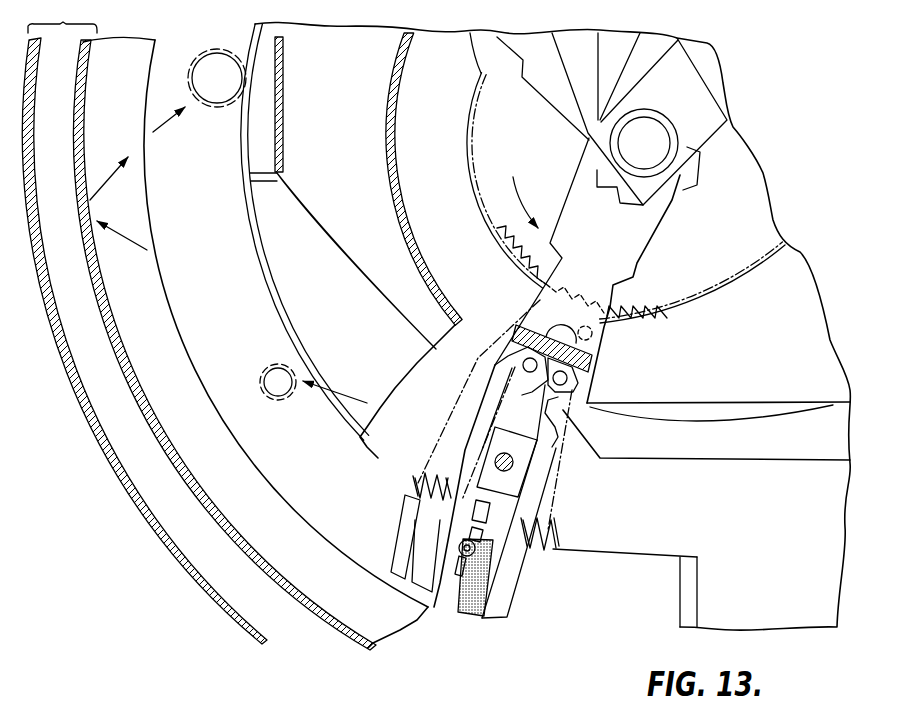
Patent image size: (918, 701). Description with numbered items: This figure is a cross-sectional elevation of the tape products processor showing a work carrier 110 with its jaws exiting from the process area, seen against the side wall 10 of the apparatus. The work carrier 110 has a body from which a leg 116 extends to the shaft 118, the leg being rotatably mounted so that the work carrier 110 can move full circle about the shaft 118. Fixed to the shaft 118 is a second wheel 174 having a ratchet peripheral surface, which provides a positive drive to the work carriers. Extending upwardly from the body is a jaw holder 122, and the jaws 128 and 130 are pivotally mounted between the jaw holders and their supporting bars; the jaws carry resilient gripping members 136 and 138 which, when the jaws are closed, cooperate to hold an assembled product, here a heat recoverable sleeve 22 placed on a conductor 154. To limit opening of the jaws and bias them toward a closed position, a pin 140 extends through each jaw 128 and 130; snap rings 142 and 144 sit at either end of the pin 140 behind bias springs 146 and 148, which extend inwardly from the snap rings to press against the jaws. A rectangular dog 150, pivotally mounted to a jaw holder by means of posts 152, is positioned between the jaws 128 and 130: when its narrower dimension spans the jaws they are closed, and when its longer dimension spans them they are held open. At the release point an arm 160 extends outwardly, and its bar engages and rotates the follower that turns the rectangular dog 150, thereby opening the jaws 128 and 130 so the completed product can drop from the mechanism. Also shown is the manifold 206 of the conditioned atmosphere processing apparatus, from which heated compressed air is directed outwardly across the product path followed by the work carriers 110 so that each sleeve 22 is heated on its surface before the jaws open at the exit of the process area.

The side wall 10 is at (803, 290).
The heat recoverable sleeve 22 is at (215, 108).
The work carrier 110 is at (655, 240).
The leg 116 is at (625, 265).
The shaft 118 is at (628, 145).
The jaw holder 122 is at (507, 537).
The jaw 128 is at (510, 597).
The jaw 130 is at (418, 557).
The resilient gripping member 136 is at (478, 613).
The resilient gripping member 138 is at (420, 580).
The pin 140 is at (415, 476).
The snap ring 142 is at (557, 535).
The snap ring 144 is at (428, 470).
The bias spring 146 is at (548, 525).
The bias spring 148 is at (412, 492).
The rectangular dog 150 is at (522, 438).
The post 152 is at (517, 463).
The conductor 154 is at (455, 540).
The arm 160 is at (784, 442).
The second wheel 174 is at (537, 228).
The manifold 206 is at (277, 210).